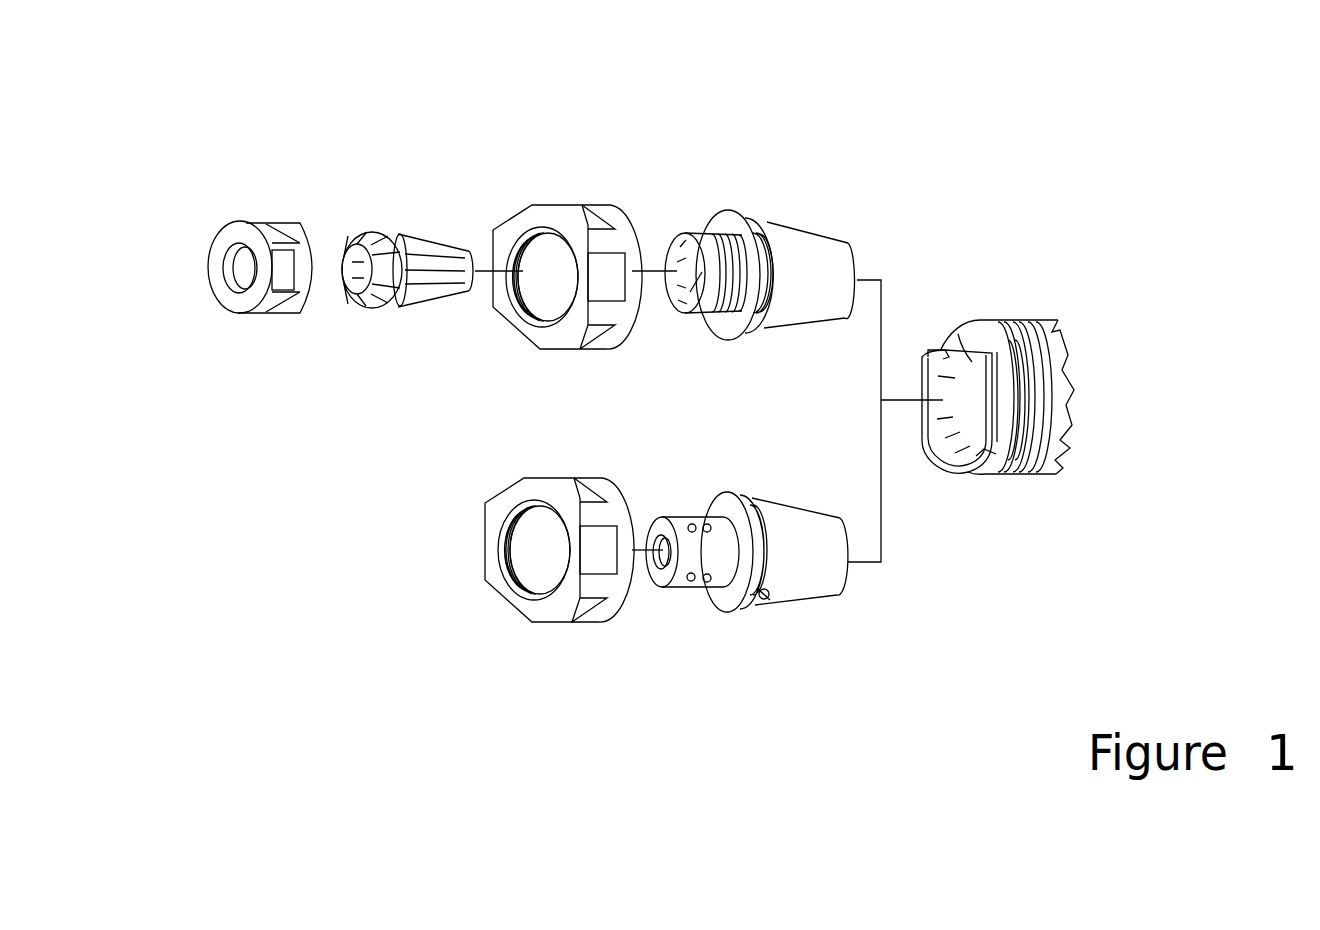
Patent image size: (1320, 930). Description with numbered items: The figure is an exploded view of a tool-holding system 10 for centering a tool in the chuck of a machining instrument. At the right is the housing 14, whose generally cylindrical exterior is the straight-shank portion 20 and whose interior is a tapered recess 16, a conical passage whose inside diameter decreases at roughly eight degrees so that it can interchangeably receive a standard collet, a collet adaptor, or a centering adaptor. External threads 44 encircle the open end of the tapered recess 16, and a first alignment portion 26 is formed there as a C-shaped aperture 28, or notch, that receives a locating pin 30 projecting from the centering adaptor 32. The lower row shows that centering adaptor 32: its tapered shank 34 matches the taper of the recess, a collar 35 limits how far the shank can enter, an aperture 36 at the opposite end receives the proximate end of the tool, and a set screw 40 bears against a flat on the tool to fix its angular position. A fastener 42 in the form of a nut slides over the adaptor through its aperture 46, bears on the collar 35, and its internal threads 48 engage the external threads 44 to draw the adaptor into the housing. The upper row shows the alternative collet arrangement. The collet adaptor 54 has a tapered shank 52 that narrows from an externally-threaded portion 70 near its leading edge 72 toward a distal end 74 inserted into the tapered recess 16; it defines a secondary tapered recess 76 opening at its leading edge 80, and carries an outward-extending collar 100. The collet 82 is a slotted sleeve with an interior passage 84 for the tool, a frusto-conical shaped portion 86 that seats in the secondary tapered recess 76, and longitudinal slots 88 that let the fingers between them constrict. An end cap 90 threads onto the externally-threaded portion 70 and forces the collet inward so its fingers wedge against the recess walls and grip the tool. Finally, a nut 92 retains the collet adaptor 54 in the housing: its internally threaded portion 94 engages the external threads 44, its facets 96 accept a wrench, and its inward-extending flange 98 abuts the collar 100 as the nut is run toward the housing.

The tool-holding system 10 is at (1012, 148).
The housing 14 is at (1072, 462).
The tapered recess 16 is at (977, 383).
The straight-shank portion 20 is at (1042, 472).
The first alignment portion 26 is at (982, 464).
The aperture 28 is at (930, 350).
The locating pin 30 is at (770, 603).
The centering adaptor 32 is at (738, 622).
The tapered shank 34 is at (800, 508).
The collar 35 is at (720, 604).
The aperture 36 is at (655, 530).
The set screw 40 is at (690, 518).
The fastener 42 is at (535, 622).
The external threads 44 is at (1002, 322).
The aperture 46 is at (538, 524).
The internal threads 48 is at (487, 539).
The tapered shank 52 is at (803, 227).
The collet adaptor 54 is at (760, 210).
The externally-threaded portion 70 is at (696, 230).
The leading edge 72 is at (668, 250).
The distal end 74 is at (848, 244).
The secondary tapered recess 76 is at (674, 306).
The leading edge 80 is at (686, 310).
The collet 82 is at (380, 222).
The interior passage 84 is at (360, 292).
The frusto-conical shaped portion 86 is at (422, 240).
The longitudinal slots 88 is at (412, 292).
The end cap 90 is at (236, 222).
The nut 92 is at (560, 196).
The internally threaded portion 94 is at (534, 311).
The facets 96 is at (595, 307).
The inward-extending flange 98 is at (533, 258).
The outward-extending collar 100 is at (720, 222).